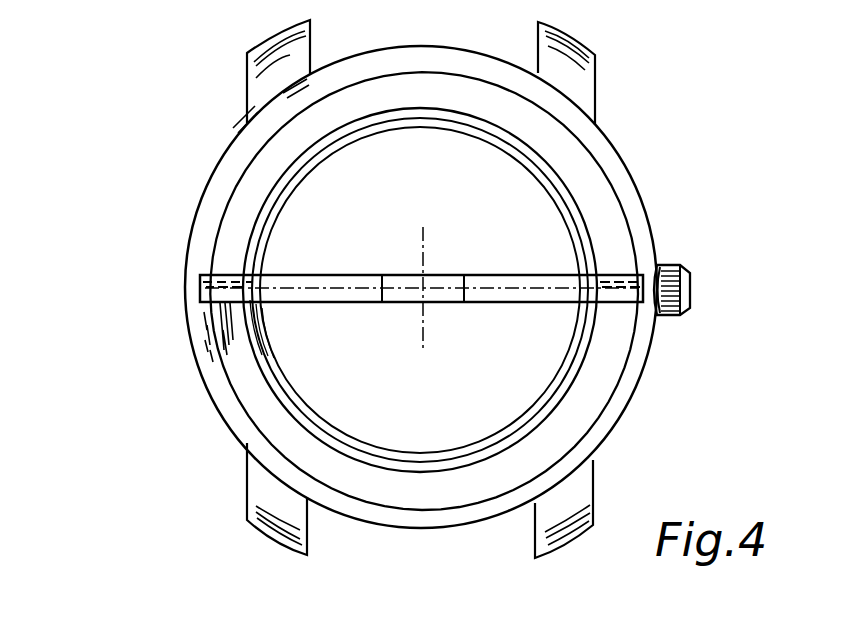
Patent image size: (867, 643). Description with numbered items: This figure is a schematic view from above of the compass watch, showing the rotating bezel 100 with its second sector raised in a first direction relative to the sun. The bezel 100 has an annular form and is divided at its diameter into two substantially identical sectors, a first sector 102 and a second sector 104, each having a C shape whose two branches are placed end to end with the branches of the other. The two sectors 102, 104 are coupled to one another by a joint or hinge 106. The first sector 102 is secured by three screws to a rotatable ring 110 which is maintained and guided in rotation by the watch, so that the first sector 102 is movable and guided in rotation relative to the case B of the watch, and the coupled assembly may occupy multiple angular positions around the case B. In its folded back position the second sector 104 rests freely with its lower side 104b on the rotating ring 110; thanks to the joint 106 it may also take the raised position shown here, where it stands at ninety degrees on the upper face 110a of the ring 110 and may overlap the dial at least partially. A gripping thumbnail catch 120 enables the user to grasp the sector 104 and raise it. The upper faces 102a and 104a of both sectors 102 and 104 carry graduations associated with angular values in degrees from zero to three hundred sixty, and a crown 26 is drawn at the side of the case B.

The case B is at (610, 130).
The crown 26 is at (681, 293).
The bezel 100 is at (238, 412).
The first sector 102 is at (229, 338).
The upper face of first sector 102a is at (599, 393).
The second sector 104 is at (294, 283).
The upper face of second sector 104a is at (516, 306).
The lower side of second sector 104b is at (497, 270).
The joint or hinge 106 is at (189, 290).
The rotatable ring 110 is at (612, 240).
The upper face of ring 110a is at (600, 201).
The gripping thumbnail catch 120 is at (410, 293).